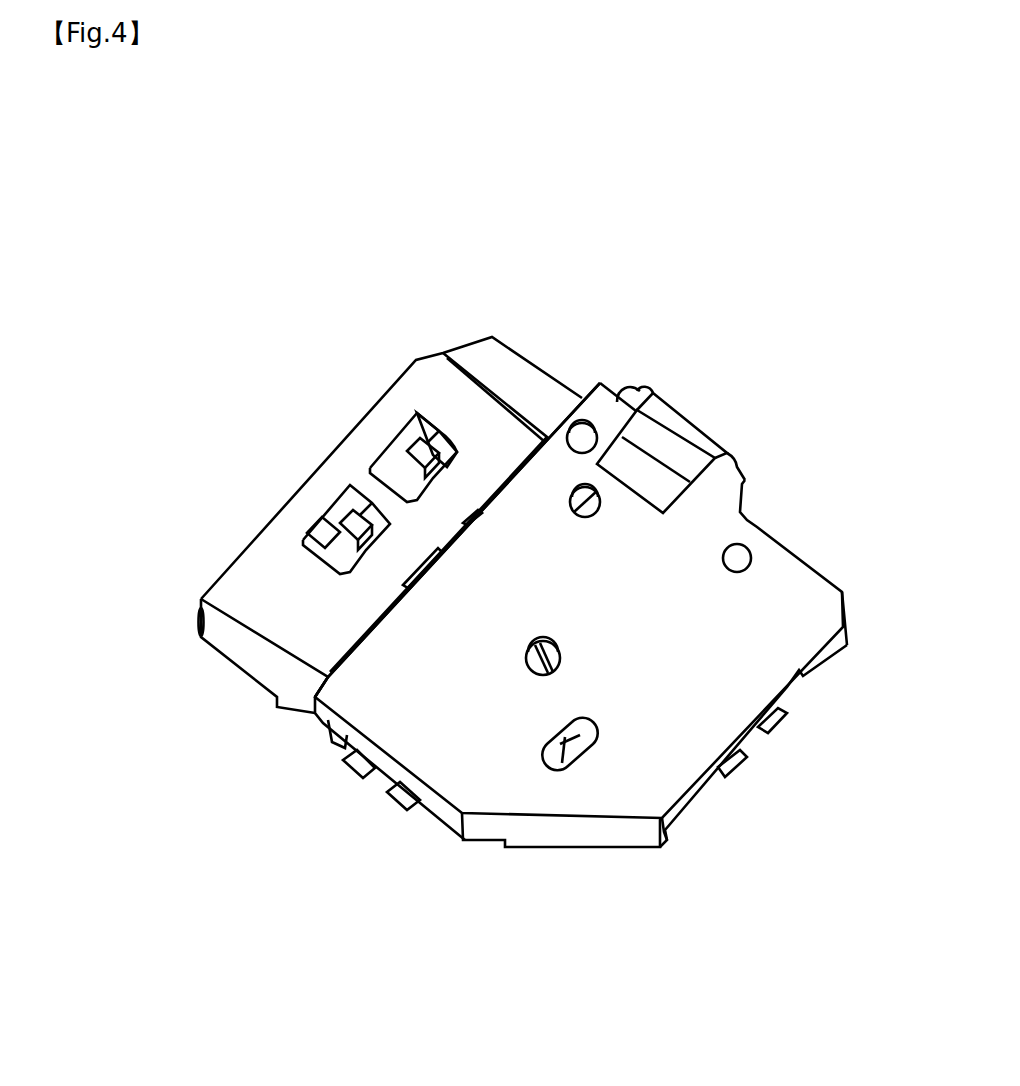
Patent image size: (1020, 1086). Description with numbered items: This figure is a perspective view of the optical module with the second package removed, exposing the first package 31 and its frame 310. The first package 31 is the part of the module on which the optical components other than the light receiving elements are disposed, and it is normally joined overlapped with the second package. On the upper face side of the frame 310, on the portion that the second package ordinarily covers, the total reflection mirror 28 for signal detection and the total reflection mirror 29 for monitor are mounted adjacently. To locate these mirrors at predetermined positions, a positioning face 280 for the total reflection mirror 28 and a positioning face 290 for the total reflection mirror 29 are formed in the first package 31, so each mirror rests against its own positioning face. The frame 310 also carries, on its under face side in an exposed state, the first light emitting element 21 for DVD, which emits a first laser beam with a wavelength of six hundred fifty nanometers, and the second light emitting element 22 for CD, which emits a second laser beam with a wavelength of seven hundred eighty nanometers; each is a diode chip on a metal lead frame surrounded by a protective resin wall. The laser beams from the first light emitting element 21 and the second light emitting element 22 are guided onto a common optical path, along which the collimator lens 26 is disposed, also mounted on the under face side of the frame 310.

The first light emitting element 21 is at (398, 800).
The second light emitting element 22 is at (782, 723).
The collimator lens 26 is at (687, 423).
The total reflection mirror for signal detection 28 is at (367, 532).
The positioning face for the total reflection mirror for signal detection 280 is at (304, 540).
The total reflection mirror for monitor 29 is at (417, 477).
The positioning face for the total reflection mirror for monitor 290 is at (430, 440).
The first package 31 is at (838, 522).
The frame 310 is at (594, 410).